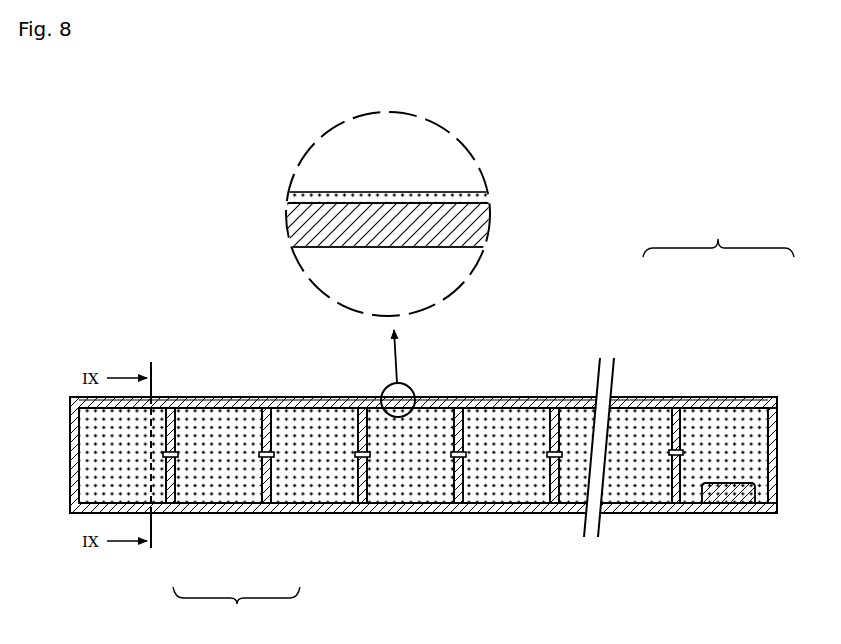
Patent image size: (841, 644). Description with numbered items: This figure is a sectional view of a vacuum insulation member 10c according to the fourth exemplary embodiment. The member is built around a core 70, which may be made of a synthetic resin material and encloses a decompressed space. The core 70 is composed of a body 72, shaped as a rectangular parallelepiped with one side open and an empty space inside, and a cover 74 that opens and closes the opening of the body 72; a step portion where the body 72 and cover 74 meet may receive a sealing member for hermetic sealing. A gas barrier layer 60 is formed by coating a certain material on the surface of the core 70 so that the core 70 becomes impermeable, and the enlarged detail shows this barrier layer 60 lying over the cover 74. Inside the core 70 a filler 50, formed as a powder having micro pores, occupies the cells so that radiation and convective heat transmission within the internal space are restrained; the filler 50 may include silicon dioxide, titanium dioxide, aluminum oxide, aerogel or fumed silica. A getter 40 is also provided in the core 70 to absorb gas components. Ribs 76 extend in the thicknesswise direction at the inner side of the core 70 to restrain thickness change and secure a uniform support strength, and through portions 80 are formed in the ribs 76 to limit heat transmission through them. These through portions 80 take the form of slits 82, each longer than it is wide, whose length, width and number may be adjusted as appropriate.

The vacuum insulation member 10c is at (113, 292).
The getter 40 is at (723, 490).
The filler 50 is at (398, 478).
The gas barrier layer 60 is at (392, 197).
The core 70 is at (733, 232).
The body 72 is at (775, 445).
The cover 74 is at (407, 243).
The ribs 76 is at (672, 428).
The through portions 80 is at (236, 608).
The slits 82 is at (178, 455).